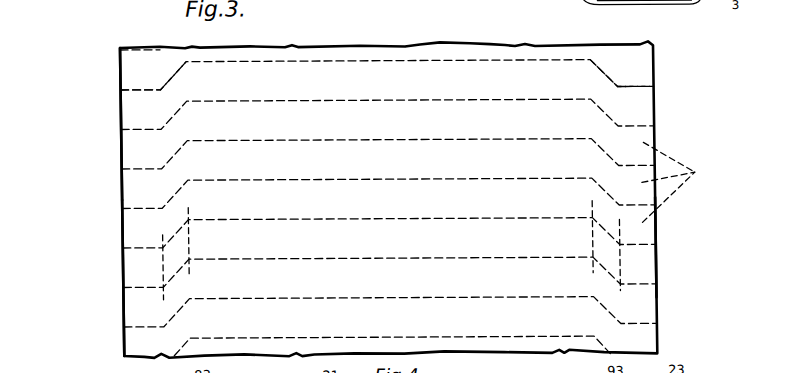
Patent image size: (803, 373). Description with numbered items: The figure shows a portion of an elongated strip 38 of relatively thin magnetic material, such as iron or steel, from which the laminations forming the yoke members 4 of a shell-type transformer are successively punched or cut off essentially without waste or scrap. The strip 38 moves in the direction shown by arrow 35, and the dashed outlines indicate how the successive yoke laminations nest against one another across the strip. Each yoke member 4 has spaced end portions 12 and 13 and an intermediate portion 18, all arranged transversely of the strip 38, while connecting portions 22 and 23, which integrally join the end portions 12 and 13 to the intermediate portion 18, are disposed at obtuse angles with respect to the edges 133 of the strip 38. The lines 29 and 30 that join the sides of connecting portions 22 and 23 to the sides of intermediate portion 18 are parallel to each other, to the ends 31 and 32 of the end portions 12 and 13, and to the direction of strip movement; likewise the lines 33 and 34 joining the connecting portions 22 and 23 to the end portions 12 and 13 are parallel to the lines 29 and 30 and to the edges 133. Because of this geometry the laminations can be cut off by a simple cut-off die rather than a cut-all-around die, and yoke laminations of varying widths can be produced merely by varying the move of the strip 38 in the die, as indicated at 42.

The yoke member 4 is at (675, 182).
The spaced end portion 12 is at (137, 110).
The spaced end portion 13 is at (630, 115).
The intermediate portion 18 is at (413, 78).
The connecting portion 22 is at (172, 100).
The connecting portion 23 is at (583, 84).
The line 29 is at (189, 245).
The line 30 is at (588, 238).
The end of spaced end portion 31 is at (120, 263).
The end of spaced end portion 32 is at (655, 255).
The line 33 is at (159, 272).
The line 34 is at (620, 258).
The arrow 35 is at (388, 219).
The strip of magnetic material 38 is at (507, 47).
The move of the strip 42 is at (115, 91).
The edge of strip 133 is at (115, 147).